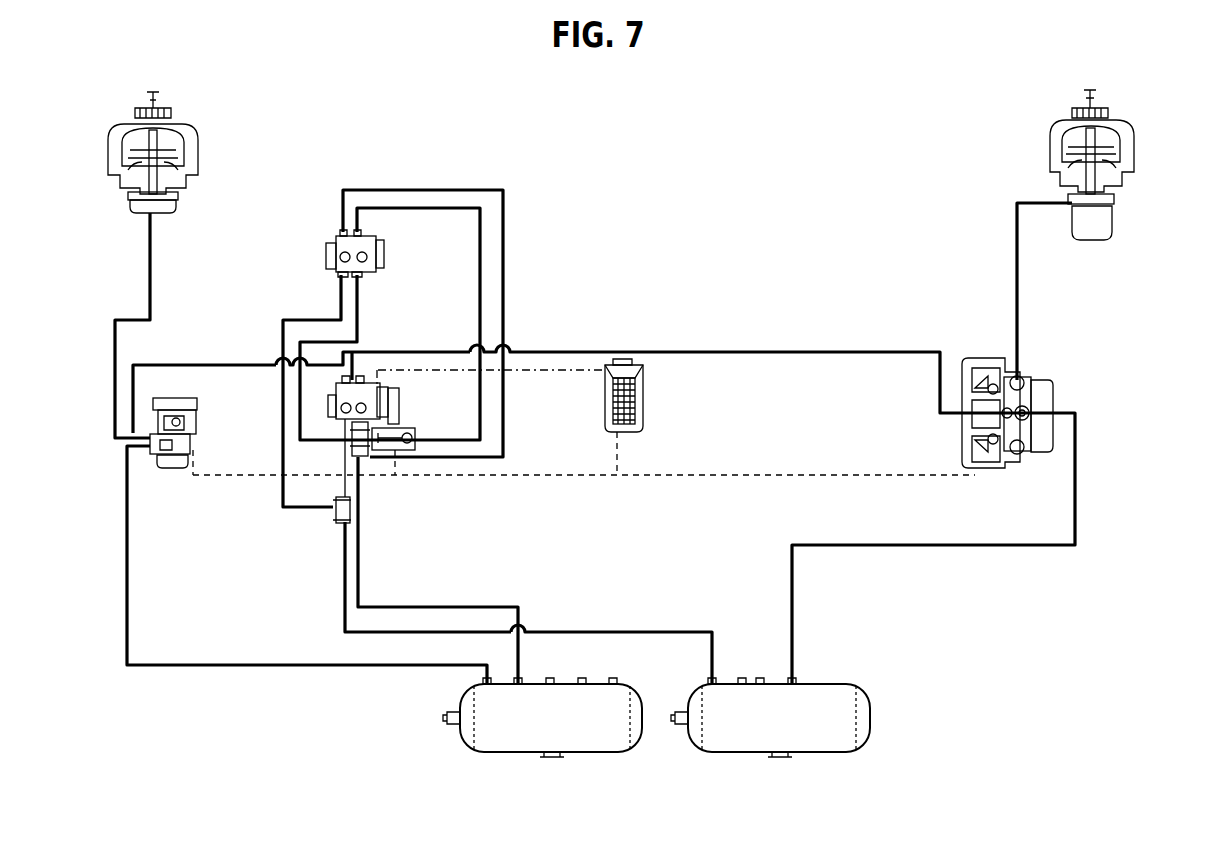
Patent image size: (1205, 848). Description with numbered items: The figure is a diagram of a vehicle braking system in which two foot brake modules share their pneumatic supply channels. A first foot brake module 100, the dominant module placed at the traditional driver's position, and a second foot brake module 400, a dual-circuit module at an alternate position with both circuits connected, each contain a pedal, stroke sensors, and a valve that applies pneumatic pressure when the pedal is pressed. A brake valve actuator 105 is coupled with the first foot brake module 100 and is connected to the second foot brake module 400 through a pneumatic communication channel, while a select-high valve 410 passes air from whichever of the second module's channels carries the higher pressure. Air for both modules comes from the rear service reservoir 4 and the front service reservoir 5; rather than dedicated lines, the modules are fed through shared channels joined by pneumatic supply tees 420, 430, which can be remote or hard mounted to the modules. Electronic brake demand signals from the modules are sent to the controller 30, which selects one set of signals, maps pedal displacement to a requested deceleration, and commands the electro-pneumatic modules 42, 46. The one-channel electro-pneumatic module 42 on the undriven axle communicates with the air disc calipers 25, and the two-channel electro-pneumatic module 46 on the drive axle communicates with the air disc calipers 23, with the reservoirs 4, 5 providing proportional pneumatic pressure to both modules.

The rear service reservoir 4 is at (830, 753).
The front service reservoir 5 is at (619, 754).
The air disc calipers 23 is at (1136, 146).
The air disc calipers 25 is at (108, 152).
The controller 30 is at (646, 392).
The electro-pneumatic module 42 is at (197, 434).
The electro-pneumatic module 46 is at (1045, 378).
The first foot brake module 100 is at (330, 407).
The brake valve actuator 105 is at (399, 408).
The second foot brake module 400 is at (325, 262).
The select-high valve 410 is at (413, 448).
The pneumatic supply tee 420 is at (336, 524).
The pneumatic supply tee 430 is at (363, 455).